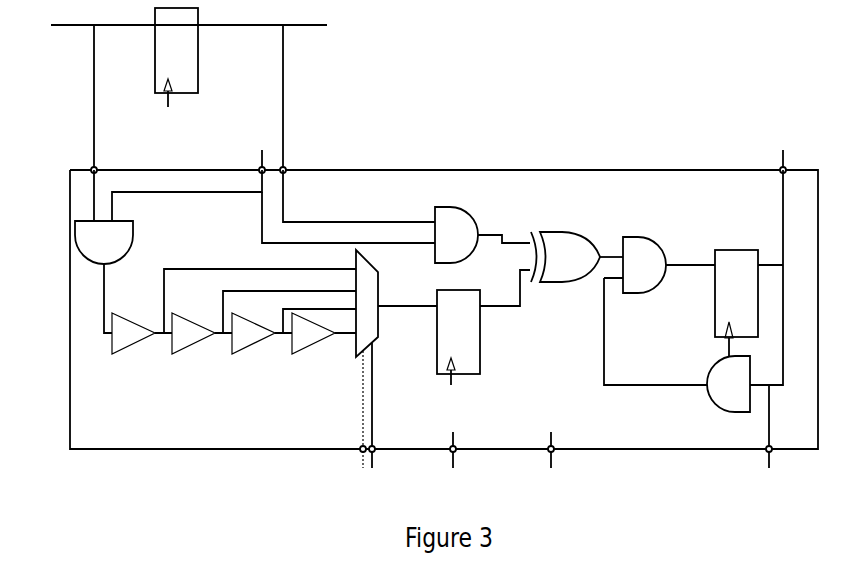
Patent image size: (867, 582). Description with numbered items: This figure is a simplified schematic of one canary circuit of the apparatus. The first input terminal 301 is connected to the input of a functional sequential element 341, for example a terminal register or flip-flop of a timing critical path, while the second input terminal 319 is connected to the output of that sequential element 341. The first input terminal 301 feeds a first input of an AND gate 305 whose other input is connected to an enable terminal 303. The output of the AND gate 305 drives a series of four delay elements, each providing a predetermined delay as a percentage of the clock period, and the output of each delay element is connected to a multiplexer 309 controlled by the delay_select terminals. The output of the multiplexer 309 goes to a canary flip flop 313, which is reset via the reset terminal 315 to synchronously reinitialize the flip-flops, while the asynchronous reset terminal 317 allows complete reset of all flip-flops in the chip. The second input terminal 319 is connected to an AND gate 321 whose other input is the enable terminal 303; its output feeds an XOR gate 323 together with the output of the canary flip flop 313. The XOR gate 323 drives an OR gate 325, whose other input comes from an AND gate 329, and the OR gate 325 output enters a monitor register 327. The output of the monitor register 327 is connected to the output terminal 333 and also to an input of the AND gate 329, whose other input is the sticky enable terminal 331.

The first input terminal 301 is at (91, 168).
The enable terminal 303 is at (258, 173).
The AND gate 305 is at (128, 232).
The multiplexer 309 is at (380, 283).
The canary flip flop 313 is at (482, 345).
The reset terminal 315 is at (456, 445).
The asynchronous reset terminal 317 is at (555, 452).
The second input terminal 319 is at (285, 169).
The AND gate 321 is at (462, 207).
The XOR gate 323 is at (560, 232).
The OR gate 325 is at (640, 237).
The monitor register 327 is at (713, 313).
The AND gate 329 is at (740, 414).
The sticky enable terminal 331 is at (775, 453).
The output terminal 333 is at (788, 168).
The functional sequential element 341 is at (199, 57).